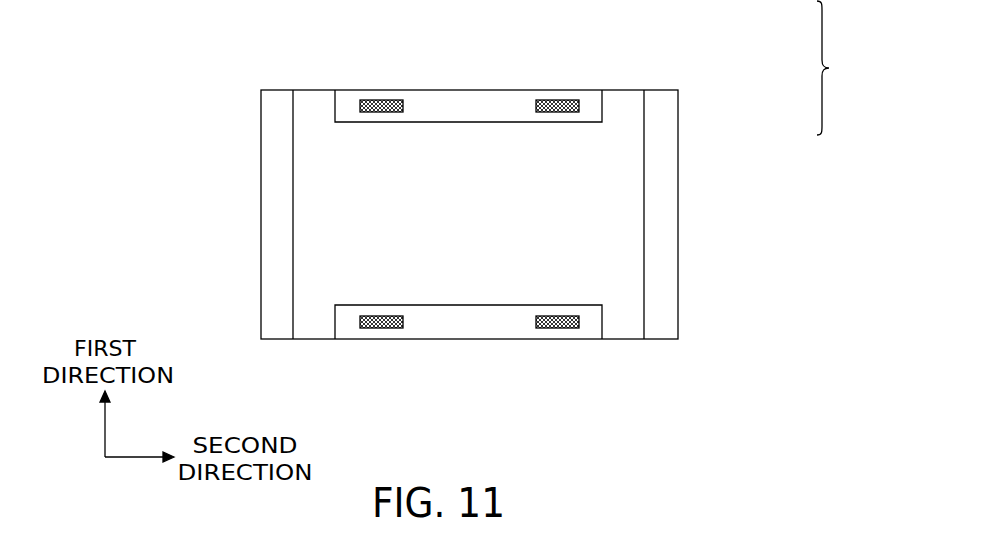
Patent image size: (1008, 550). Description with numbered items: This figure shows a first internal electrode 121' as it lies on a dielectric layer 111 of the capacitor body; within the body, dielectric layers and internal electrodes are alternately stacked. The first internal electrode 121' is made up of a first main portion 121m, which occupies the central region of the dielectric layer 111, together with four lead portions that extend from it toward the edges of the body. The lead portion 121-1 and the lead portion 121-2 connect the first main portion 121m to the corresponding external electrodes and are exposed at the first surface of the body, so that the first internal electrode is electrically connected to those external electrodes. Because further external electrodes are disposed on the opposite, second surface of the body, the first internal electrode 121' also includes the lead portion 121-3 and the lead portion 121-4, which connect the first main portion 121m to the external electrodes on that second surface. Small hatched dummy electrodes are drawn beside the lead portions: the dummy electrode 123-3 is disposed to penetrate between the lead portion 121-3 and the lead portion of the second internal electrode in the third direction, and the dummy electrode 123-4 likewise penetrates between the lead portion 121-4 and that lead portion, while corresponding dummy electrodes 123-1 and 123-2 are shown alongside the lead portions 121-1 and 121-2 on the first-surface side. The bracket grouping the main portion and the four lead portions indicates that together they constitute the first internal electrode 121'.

The dielectric layer 111 is at (665, 213).
The frame 121' is at (813, 69).
The first main portion 121m is at (472, 330).
The 1-1 lead portion 121-1 is at (315, 328).
The 1-2 lead portion 121-2 is at (624, 328).
The 1-3 lead portion 121-3 is at (315, 100).
The 1-4 lead portion 121-4 is at (624, 100).
The first adhesive member 123-1 is at (390, 328).
The second adhesive member 123-2 is at (553, 328).
The 1-3 dummy electrode 123-3 is at (390, 100).
The 1-4 dummy electrode 123-4 is at (554, 100).